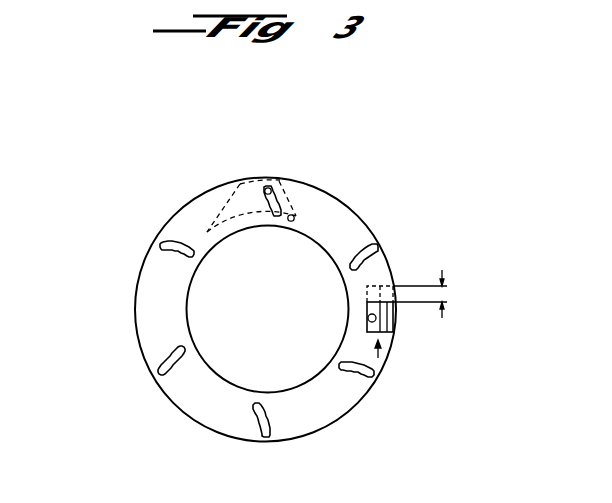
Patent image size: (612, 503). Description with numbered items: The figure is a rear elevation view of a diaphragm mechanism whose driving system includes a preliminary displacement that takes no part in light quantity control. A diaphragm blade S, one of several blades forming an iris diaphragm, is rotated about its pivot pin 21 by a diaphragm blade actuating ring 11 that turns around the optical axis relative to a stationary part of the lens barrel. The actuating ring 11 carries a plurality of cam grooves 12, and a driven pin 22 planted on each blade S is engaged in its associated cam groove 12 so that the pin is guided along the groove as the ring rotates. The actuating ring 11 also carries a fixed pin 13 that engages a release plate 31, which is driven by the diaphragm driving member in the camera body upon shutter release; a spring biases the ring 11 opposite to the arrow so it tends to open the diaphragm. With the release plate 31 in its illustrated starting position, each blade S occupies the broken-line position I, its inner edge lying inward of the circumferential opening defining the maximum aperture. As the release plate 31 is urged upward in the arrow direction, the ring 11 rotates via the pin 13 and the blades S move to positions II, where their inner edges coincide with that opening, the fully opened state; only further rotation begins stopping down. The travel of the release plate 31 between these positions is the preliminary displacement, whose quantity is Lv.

The diaphragm blade actuating ring 11 is at (149, 339).
The cam grooves 12 is at (270, 203).
The fixed pin 13 is at (368, 318).
The pivot pin 21 is at (294, 217).
The driven pin 22 is at (268, 186).
The release plate 31 is at (392, 325).
The starting positions of diaphragm blades I is at (228, 202).
The fully opened positions of diaphragm blades II is at (220, 235).
The diaphragm blade S is at (228, 216).
The quantity of preliminary displacement Lv is at (434, 294).